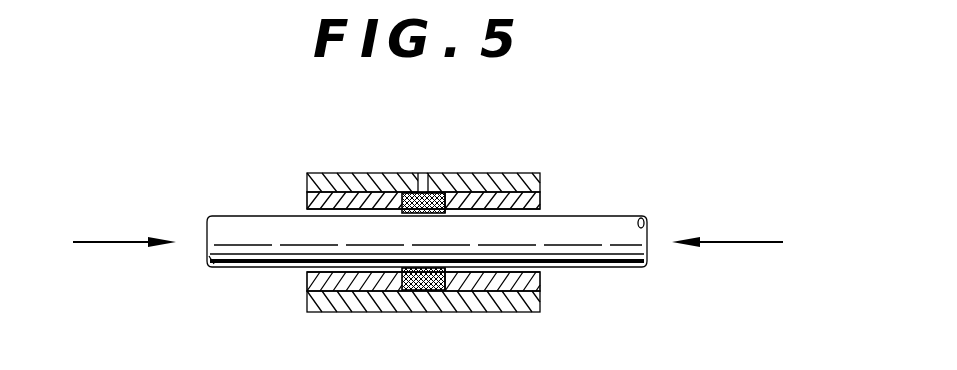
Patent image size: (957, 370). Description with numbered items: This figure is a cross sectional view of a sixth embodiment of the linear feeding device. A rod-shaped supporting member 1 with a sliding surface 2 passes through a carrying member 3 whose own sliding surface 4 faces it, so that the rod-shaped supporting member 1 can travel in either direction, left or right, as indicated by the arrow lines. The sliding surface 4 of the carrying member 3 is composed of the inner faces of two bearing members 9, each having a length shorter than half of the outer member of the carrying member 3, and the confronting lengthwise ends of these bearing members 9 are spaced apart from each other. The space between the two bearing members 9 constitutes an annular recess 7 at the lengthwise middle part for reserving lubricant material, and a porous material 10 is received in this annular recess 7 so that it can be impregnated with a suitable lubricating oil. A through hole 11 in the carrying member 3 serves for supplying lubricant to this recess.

The rod-shaped supporting member 1 is at (597, 226).
The sliding surface 2 is at (497, 270).
The carrying member 3 is at (353, 185).
The sliding surface 4 is at (518, 204).
The annular recess 7 is at (407, 175).
The bearing member 9 is at (333, 198).
The porous material 10 is at (447, 190).
The through hole 11 is at (423, 190).